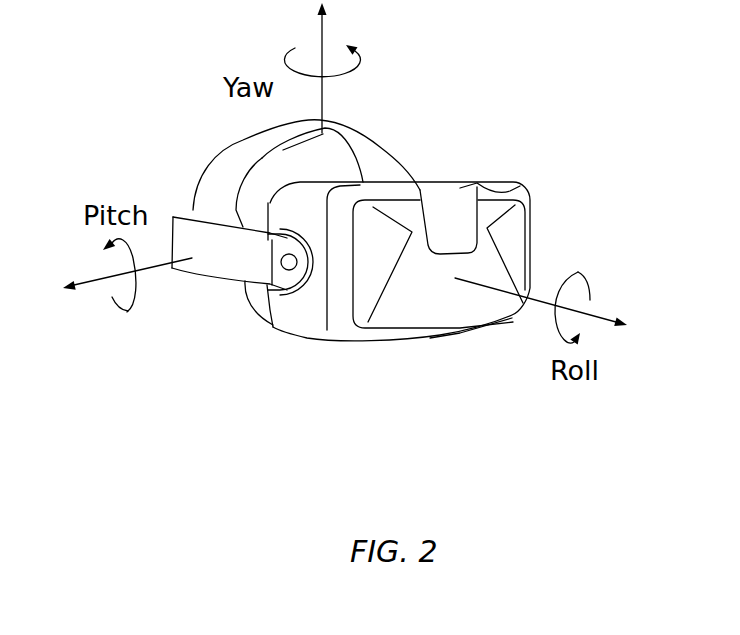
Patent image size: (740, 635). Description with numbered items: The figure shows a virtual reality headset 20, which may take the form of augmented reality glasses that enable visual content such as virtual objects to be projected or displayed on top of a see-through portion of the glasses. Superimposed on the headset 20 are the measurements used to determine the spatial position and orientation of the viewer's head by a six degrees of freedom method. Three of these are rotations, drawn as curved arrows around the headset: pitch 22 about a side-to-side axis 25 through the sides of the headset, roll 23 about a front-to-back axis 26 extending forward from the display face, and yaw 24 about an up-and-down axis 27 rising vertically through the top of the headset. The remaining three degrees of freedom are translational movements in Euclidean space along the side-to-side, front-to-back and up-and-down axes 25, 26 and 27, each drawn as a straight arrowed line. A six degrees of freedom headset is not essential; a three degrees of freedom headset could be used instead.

The virtual reality headset 20 is at (428, 340).
The pitch 22 is at (132, 310).
The roll 23 is at (578, 272).
The yaw 24 is at (305, 47).
The side-to-side axis 25 is at (157, 266).
The front-to-back axis 26 is at (540, 304).
The up-and-down axis 27 is at (322, 98).